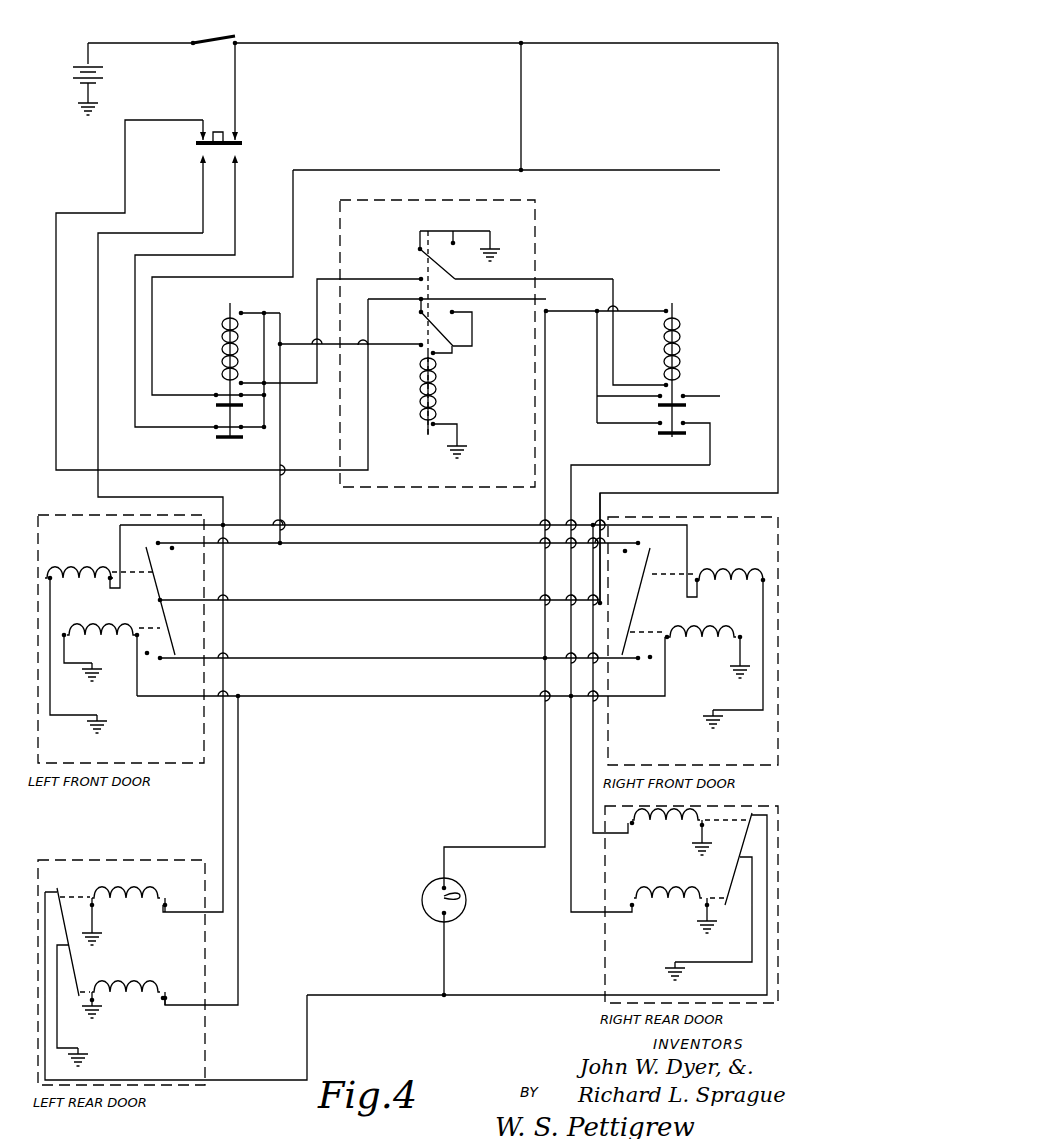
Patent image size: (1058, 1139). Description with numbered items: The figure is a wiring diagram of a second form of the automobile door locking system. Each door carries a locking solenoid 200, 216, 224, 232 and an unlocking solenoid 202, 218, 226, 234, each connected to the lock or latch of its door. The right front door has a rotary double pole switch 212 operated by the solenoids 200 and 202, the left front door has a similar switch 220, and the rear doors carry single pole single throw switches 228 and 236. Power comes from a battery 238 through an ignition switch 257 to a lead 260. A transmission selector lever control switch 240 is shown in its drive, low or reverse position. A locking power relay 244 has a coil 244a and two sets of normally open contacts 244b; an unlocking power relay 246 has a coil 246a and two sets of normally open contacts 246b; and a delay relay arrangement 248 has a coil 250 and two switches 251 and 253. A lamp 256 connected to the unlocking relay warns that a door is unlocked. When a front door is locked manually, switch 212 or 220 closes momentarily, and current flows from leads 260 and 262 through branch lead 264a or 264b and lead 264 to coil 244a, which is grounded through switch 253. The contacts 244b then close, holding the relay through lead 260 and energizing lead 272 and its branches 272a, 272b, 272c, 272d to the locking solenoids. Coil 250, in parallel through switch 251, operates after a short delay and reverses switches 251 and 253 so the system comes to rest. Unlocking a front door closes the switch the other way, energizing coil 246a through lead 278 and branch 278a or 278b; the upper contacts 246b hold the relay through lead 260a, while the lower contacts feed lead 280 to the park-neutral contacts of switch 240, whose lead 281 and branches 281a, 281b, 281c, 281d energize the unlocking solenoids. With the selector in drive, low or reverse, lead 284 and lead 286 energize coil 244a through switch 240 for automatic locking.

The door locking solenoid 200 is at (686, 632).
The unlocking solenoid 202 is at (704, 574).
The rotary type double pole switch 212 is at (636, 598).
The door locking solenoid 216 is at (78, 626).
The unlocking solenoid 218 is at (106, 572).
The double pole switch 220 is at (176, 582).
The door locking solenoid 224 is at (638, 898).
The unlocking solenoid 226 is at (670, 834).
The single pole single throw switch 228 is at (746, 828).
The door locking solenoid 232 is at (120, 988).
The unlocking solenoid 234 is at (108, 896).
The single pole single throw switch 236 is at (70, 940).
The battery 238 is at (103, 81).
The transmission selector lever control switch 240 is at (241, 150).
The locking power relay 244 is at (665, 366).
The relay coil 244a is at (676, 320).
The normally open switch contacts 244b is at (708, 410).
The unlocking power relay 246 is at (224, 362).
The relay coil 246a is at (226, 321).
The normally open contacts 246b is at (217, 423).
The delay relay arrangement 248 is at (420, 402).
The relay coil 250 is at (434, 394).
The delay relay switch 251 is at (420, 312).
The delay relay switch 253 is at (418, 249).
The lamp 256 is at (426, 904).
The ignition switch 257 is at (215, 32).
The lead 260 is at (303, 43).
The lead 260a is at (347, 165).
The lead 262 is at (778, 92).
The lead 264 is at (545, 568).
The branch lead 264a is at (600, 660).
The branch lead 264b is at (342, 602).
The lead 272 is at (630, 466).
The branch lead 272a is at (640, 698).
The branch lead 272b is at (137, 698).
The branch lead 272c is at (570, 848).
The branch lead 272d is at (238, 946).
The lead 278 is at (302, 441).
The branch lead 278a is at (344, 546).
The branch lead 278b is at (239, 544).
The lead 280 is at (236, 215).
The lead 281 is at (98, 412).
The branch lead 281a is at (648, 520).
The branch lead 281b is at (262, 524).
The branch lead 281c is at (594, 748).
The branch lead 281d is at (221, 842).
The lead 284 is at (236, 105).
The lead 286 is at (56, 356).